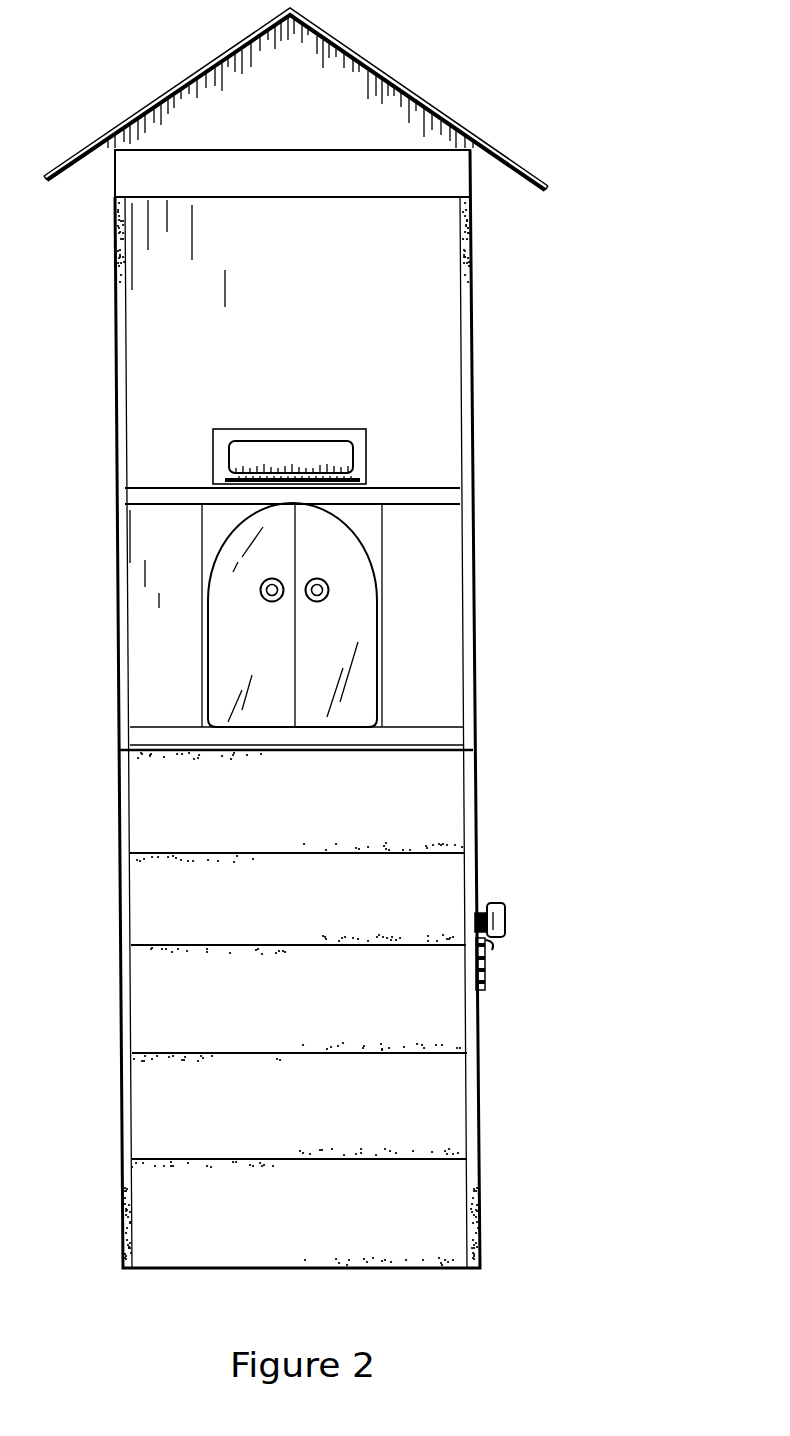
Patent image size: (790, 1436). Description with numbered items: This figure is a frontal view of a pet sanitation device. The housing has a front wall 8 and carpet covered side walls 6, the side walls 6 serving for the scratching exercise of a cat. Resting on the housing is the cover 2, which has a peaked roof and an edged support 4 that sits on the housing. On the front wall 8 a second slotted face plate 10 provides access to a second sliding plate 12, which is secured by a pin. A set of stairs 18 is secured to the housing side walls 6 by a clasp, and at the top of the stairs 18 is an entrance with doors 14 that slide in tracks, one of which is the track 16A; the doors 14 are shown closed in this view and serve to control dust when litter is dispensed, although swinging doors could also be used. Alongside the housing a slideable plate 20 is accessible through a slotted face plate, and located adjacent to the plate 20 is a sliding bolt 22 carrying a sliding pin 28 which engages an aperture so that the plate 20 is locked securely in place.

The cover 2 is at (417, 93).
The edged support 4 is at (455, 173).
The side walls 6 is at (467, 268).
The front wall 8 is at (437, 355).
The second slotted face plate 10 is at (358, 465).
The second sliding plate 12 is at (317, 452).
The track 16A is at (452, 495).
The doors 14 is at (345, 635).
The sliding bolt 22 is at (317, 580).
The set of stairs 18 is at (435, 806).
The slideable plate 20 is at (512, 912).
The sliding pin 28 is at (478, 917).